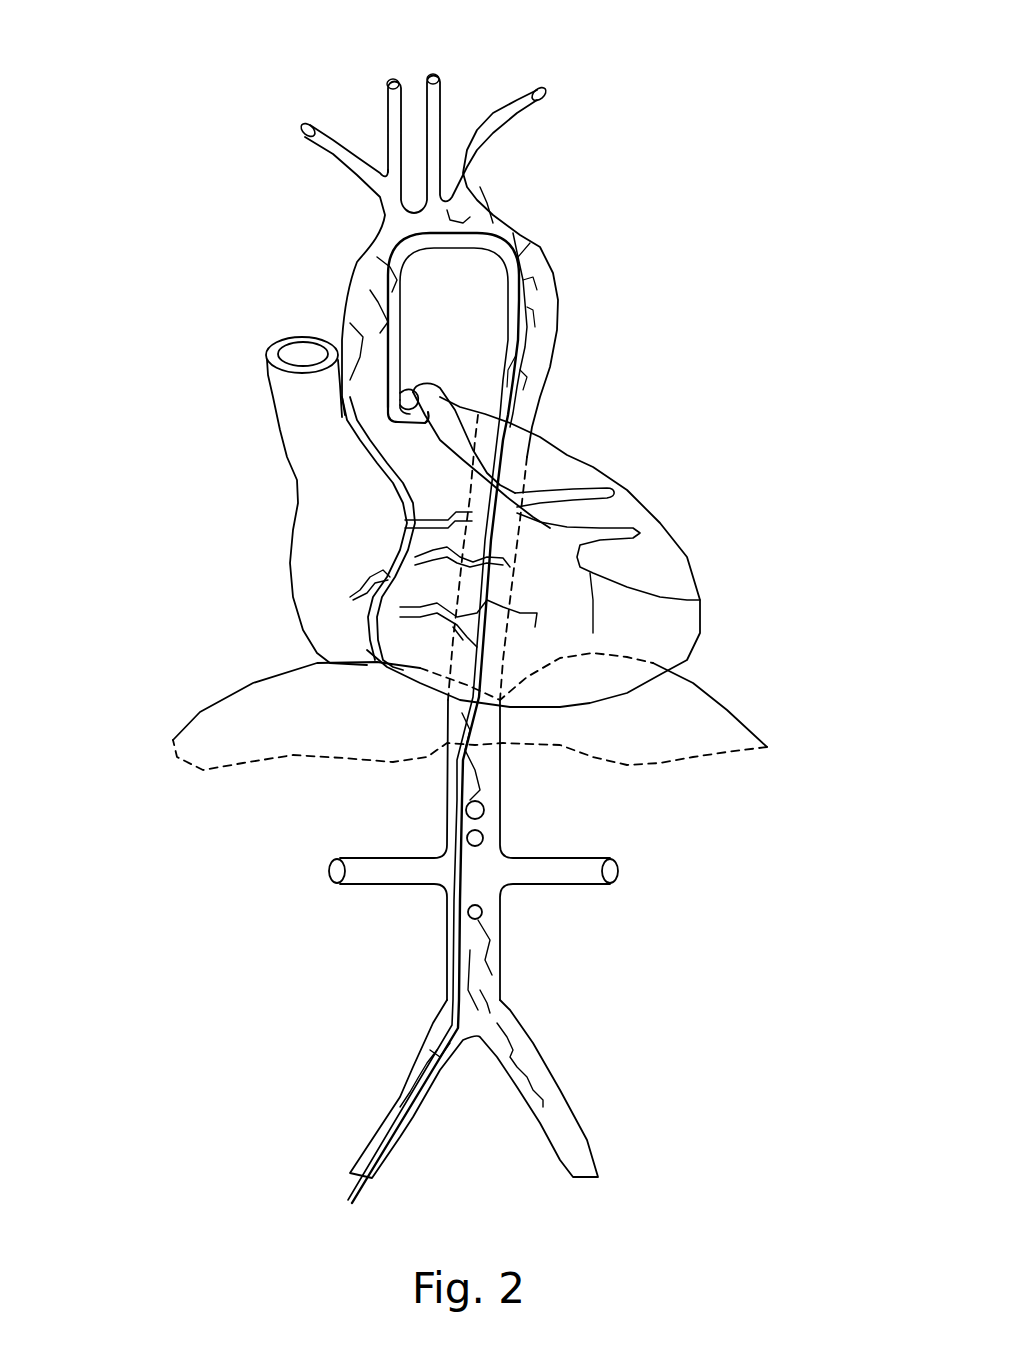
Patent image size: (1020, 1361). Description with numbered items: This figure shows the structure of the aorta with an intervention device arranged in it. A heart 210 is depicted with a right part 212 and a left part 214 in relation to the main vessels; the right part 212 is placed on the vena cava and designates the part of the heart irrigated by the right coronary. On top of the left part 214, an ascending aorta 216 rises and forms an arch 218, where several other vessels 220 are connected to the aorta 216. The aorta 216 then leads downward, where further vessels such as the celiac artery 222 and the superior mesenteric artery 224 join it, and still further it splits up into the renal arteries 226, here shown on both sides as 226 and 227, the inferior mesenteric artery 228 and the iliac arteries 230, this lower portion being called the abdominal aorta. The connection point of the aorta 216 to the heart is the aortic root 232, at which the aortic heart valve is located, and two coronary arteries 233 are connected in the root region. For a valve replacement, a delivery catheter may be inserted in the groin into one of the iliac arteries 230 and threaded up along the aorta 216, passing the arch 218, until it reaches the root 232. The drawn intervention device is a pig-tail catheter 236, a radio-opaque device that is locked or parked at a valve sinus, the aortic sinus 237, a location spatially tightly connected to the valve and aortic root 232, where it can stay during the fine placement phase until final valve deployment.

The heart 210 is at (200, 623).
The right part of the heart 212 is at (290, 503).
The left part of the heart 214 is at (660, 503).
The aorta 216 is at (358, 333).
The arch 218 is at (515, 233).
The other vessels 220 is at (433, 75).
The celiac artery 222 is at (487, 807).
The superior mesenteric artery 224 is at (487, 840).
The renal arteries 226 is at (380, 877).
The right renal artery 227 is at (557, 870).
The inferior mesenteric artery 228 is at (490, 912).
The iliac arteries 230 is at (397, 1100).
The aortic root 232 is at (387, 328).
The coronary arteries 233 is at (343, 543).
The pig-tail catheter 236 is at (388, 284).
The aortic sinus 237 is at (407, 387).